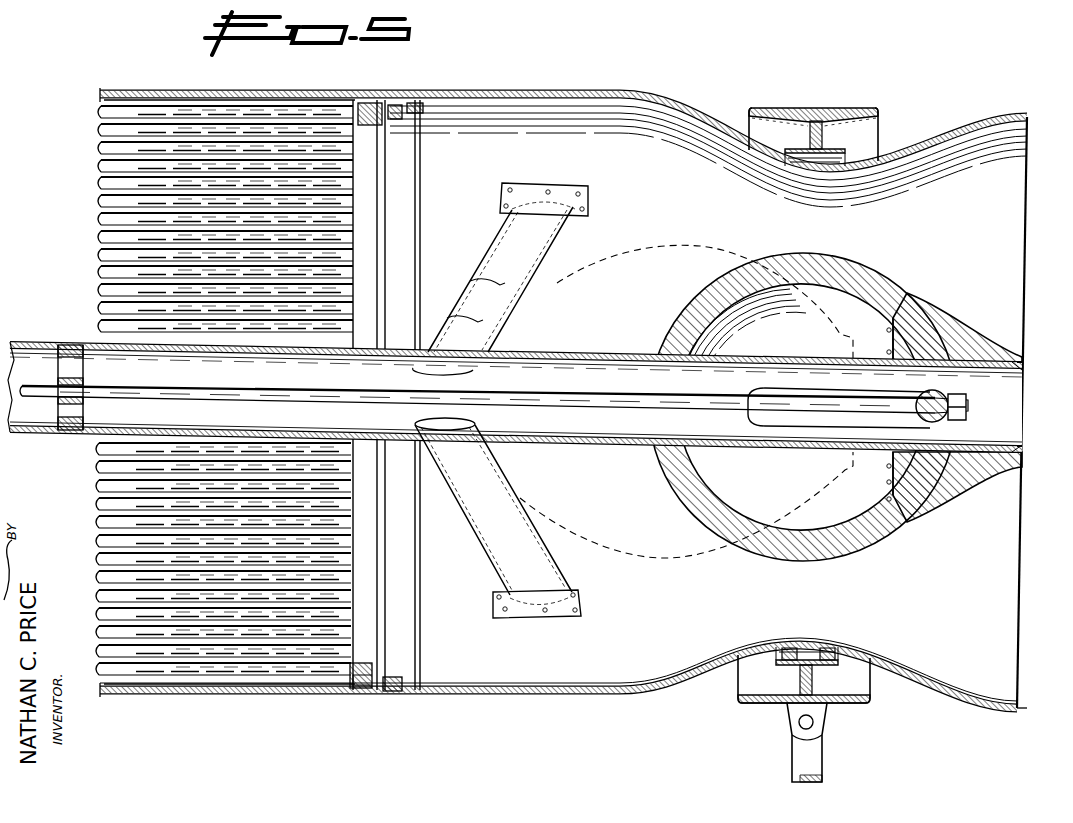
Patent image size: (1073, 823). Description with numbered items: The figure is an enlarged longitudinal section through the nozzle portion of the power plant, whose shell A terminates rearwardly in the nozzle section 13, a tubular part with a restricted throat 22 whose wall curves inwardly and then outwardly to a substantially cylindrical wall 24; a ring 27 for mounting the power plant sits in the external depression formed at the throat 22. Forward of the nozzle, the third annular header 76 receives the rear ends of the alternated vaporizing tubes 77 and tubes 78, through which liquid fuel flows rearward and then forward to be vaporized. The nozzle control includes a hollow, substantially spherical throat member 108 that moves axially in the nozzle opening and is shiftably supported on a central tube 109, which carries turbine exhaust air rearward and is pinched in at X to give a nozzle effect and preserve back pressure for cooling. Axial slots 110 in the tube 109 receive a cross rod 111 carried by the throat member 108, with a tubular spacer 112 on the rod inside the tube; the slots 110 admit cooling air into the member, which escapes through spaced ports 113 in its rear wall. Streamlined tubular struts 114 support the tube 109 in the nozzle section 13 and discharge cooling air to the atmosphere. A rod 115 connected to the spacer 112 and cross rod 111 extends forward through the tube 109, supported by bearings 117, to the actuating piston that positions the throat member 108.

The shell A is at (147, 88).
The vaporizing tubes 77 is at (217, 122).
The tubes 78 is at (263, 120).
The third annular header 76 is at (374, 104).
The ring 27 is at (835, 108).
The ports 113 is at (905, 298).
The tubular spacer 112 is at (946, 400).
The rod 111 is at (946, 418).
The axial slots 110 is at (853, 422).
The rod 115 is at (594, 400).
The central tube 109 is at (580, 448).
The throat member 108 is at (781, 560).
The struts 114 is at (567, 586).
The throat 22 is at (838, 648).
The nozzle section 13 is at (724, 670).
The cylindrical wall 24 is at (1010, 710).
The bearings 117 is at (84, 404).
The pinched-in portion X is at (1020, 385).